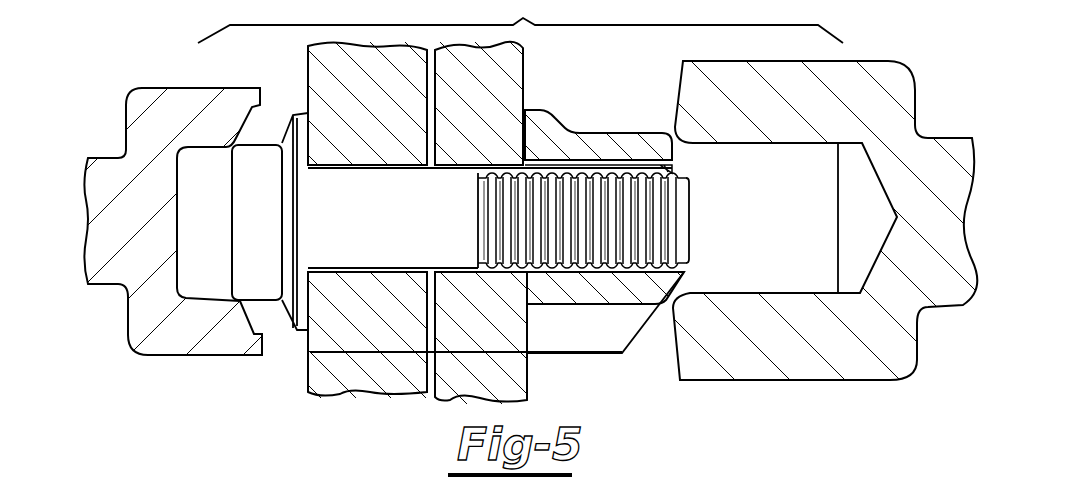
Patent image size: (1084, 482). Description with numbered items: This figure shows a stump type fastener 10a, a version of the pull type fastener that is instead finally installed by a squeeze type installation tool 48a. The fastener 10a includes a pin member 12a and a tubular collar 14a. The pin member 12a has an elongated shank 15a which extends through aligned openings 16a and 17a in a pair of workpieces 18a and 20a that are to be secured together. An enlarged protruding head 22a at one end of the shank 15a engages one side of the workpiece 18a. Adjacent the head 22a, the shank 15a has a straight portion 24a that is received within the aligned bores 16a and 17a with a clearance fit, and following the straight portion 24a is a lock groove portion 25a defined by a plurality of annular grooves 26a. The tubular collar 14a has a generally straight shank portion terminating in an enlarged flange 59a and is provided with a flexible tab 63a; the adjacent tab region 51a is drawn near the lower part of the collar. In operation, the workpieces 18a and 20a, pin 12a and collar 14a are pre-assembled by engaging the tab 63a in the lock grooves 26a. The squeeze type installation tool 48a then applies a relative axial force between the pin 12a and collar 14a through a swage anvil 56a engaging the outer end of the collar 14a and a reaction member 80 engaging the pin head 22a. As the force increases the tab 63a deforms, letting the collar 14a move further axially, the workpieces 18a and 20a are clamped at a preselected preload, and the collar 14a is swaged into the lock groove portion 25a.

The stump type fastener 10a is at (496, 241).
The pin member 12a is at (287, 104).
The tubular collar 14a is at (586, 133).
The elongated shank 15a is at (481, 330).
The aligned opening 16a is at (348, 172).
The aligned opening 17a is at (476, 172).
The workpiece 18a is at (380, 380).
The workpiece 20a is at (458, 395).
The enlarged protruding head 22a is at (275, 218).
The straight portion 24a is at (410, 227).
The lock groove portion 25a is at (592, 160).
The annular grooves 26a is at (544, 272).
The squeeze type installation tool 48a is at (520, 21).
The sleeve tab 51a is at (604, 306).
The swage anvil 56a is at (859, 70).
The enlarged flange 59a is at (540, 112).
The flexible tab 63a is at (691, 173).
The reaction member 80 is at (200, 58).